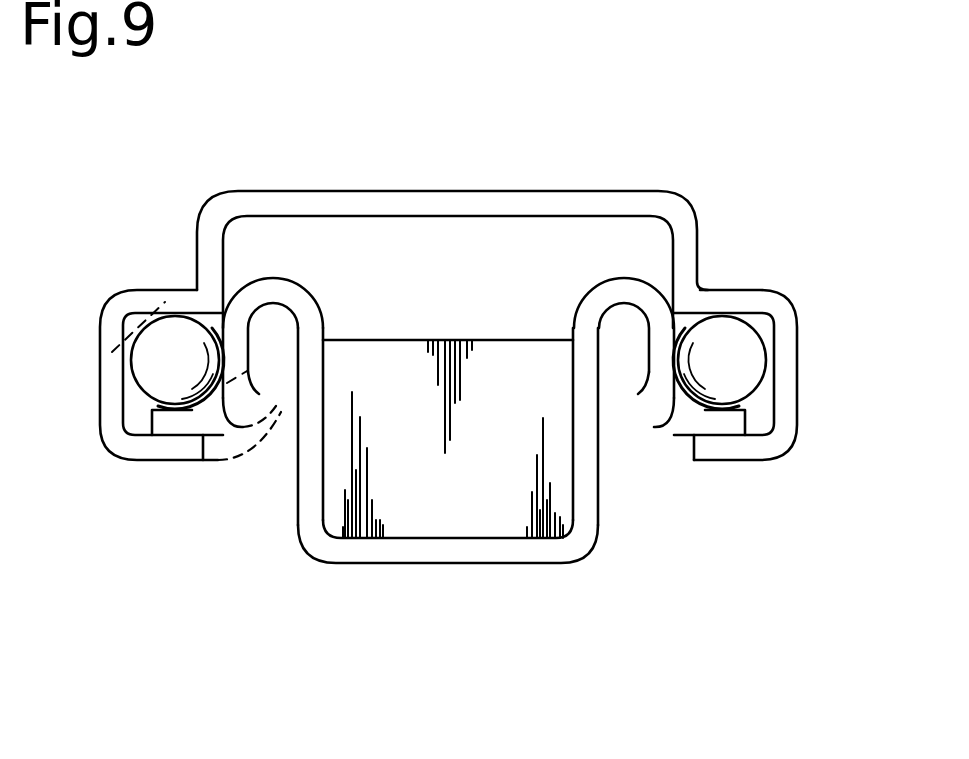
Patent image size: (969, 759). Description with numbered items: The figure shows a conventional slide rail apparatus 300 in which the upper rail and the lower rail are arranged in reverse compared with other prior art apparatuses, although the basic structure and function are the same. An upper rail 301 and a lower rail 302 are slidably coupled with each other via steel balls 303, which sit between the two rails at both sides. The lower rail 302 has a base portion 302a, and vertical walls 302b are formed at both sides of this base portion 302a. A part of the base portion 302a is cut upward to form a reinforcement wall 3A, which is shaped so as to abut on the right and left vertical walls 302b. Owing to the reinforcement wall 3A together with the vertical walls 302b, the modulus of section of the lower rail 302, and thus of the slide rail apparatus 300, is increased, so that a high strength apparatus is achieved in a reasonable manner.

The slide rail apparatus 300 is at (340, 172).
The upper rail 301 is at (477, 203).
The lower rail 302 is at (315, 523).
The base portion 302a is at (508, 552).
The vertical walls 302b is at (313, 450).
The steel balls 303 is at (160, 355).
The reinforcement wall 3A is at (423, 487).